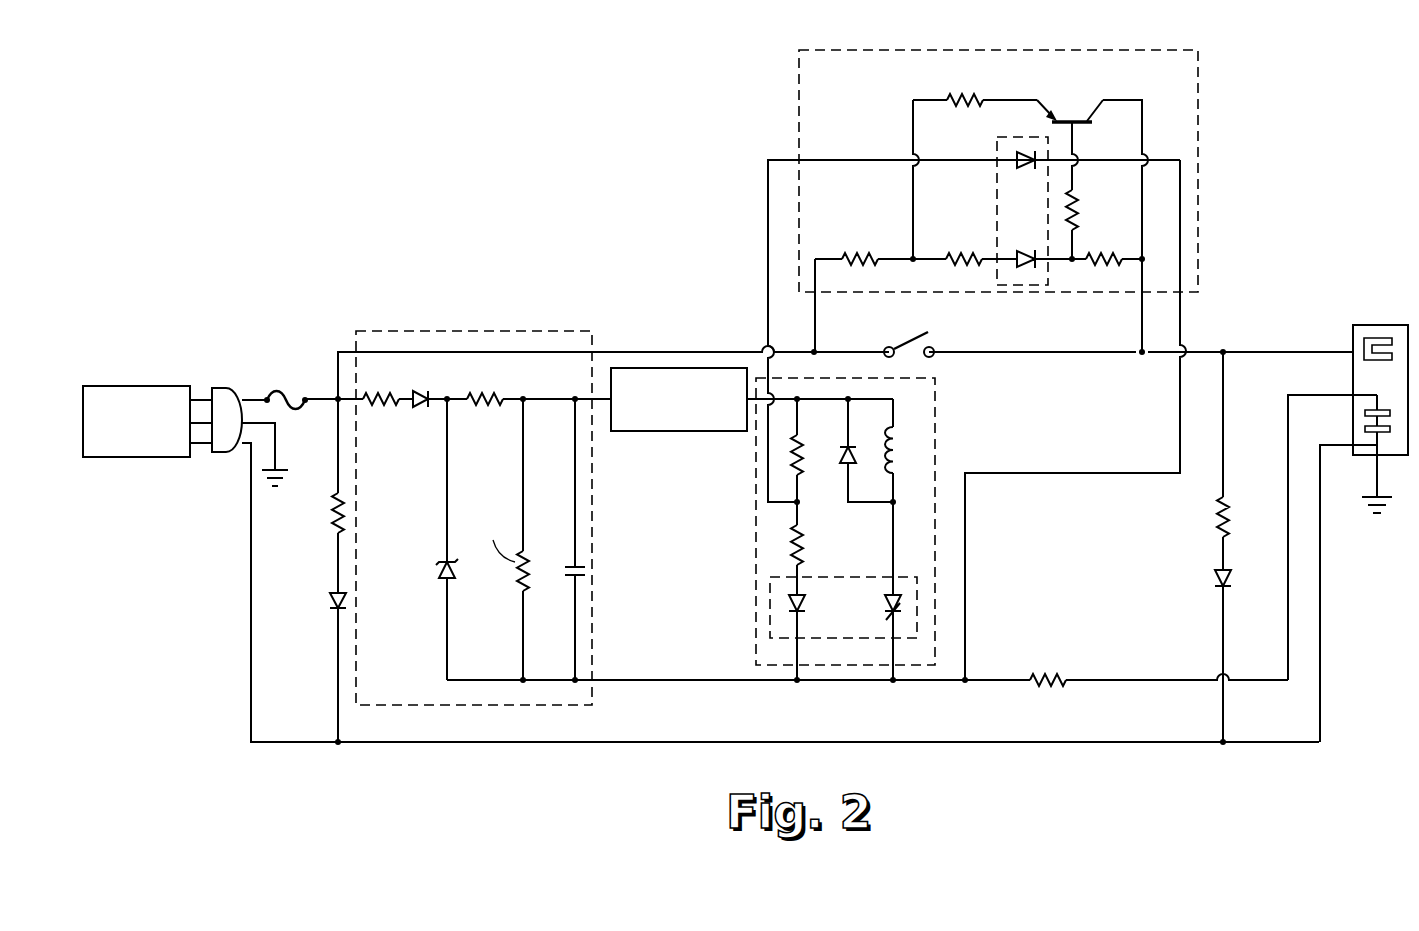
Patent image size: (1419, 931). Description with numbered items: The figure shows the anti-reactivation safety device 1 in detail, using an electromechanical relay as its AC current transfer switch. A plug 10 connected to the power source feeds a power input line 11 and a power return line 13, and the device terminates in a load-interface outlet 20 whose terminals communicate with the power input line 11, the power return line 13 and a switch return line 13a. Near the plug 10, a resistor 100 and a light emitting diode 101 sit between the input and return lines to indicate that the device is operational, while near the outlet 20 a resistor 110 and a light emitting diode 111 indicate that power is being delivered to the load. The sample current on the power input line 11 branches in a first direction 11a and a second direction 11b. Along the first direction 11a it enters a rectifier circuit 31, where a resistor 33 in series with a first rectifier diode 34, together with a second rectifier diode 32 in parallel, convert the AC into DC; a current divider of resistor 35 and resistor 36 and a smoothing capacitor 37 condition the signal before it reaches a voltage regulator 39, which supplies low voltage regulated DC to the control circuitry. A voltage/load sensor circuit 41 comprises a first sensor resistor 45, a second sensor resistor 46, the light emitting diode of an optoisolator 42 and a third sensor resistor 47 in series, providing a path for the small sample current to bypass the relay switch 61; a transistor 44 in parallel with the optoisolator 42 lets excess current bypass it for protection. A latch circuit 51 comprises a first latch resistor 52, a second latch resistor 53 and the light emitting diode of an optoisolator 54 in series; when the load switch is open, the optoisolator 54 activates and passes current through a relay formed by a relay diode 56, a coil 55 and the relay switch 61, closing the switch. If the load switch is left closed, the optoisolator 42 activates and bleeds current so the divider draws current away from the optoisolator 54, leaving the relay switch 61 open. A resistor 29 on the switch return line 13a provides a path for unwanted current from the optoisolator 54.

The anti-reactivation safety device 1 is at (575, 195).
The plug 10 is at (213, 378).
The power input line 11 is at (1258, 348).
The first direction 11a is at (336, 398).
The second direction 11b is at (336, 352).
The power return line 13 is at (1322, 497).
The switch return line 13a is at (1285, 428).
The load-interface outlet 20 is at (1385, 325).
The resistor 29 is at (1052, 674).
The rectifier circuit 31 is at (604, 536).
The second rectifier diode 32 is at (437, 570).
The resistor 33 is at (379, 392).
The first rectifier diode 34 is at (421, 410).
The resistor 35 is at (486, 393).
The resistor 36 is at (523, 571).
The capacitor 37 is at (568, 568).
The voltage regulator 39 is at (680, 432).
The voltage/load sensor circuit 41 is at (1212, 117).
The optoisolator 42 is at (988, 142).
The transistor 44 is at (1070, 118).
The first sensor resistor 45 is at (870, 255).
The second sensor resistor 46 is at (972, 255).
The third sensor resistor 47 is at (1102, 254).
The latch circuit 51 is at (946, 439).
The first latch resistor 52 is at (802, 462).
The second latch resistor 53 is at (813, 535).
The optoisolator 54 is at (905, 568).
The coil 55 is at (899, 446).
The relay diode 56 is at (855, 456).
The relay switch 61 is at (910, 340).
The resistor 100 is at (330, 515).
The diode 101 is at (330, 604).
The resistor 110 is at (1235, 520).
The diode 111 is at (1232, 581).